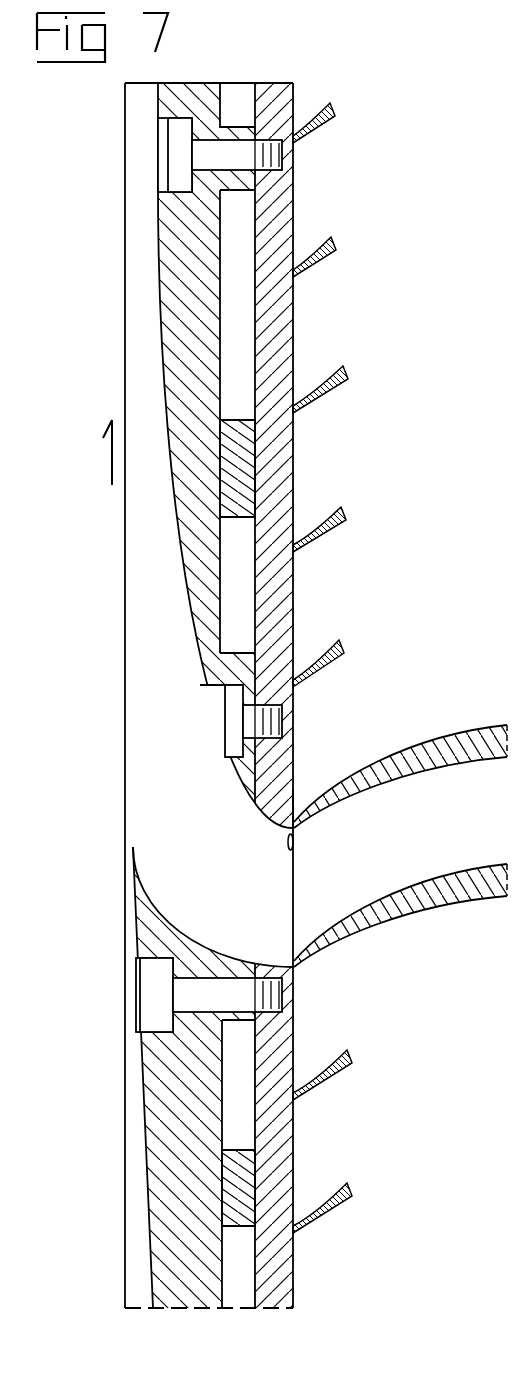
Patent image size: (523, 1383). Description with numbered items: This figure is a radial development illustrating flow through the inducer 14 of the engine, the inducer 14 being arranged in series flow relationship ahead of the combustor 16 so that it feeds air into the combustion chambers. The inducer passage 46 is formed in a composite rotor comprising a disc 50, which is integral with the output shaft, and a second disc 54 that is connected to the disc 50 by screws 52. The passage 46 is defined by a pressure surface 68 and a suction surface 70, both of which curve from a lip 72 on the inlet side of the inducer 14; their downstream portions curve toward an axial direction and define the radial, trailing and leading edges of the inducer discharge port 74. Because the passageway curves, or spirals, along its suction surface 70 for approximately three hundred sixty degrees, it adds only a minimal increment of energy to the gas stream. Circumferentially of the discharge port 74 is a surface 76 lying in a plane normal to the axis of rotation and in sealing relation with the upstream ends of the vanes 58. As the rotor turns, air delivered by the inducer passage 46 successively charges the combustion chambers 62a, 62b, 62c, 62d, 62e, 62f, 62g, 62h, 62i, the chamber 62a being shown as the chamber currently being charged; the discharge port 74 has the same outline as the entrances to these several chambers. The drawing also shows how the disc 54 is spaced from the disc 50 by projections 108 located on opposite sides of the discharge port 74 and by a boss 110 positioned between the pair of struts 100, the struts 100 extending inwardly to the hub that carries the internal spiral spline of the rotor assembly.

The inducer 14 is at (112, 677).
The combustor 16 is at (417, 700).
The inducer passage 46 is at (222, 843).
The disc 50 is at (278, 84).
The screws 52 is at (168, 133).
The second disc 54 is at (197, 1310).
The vanes 58 is at (447, 733).
The combustion chamber 62a is at (432, 818).
The combustion chamber 62b is at (392, 968).
The combustion chamber 62c is at (390, 1093).
The combustion chamber 62d is at (394, 1256).
The combustion chamber 62e is at (385, 182).
The combustion chamber 62f is at (387, 302).
The combustion chamber 62g is at (397, 452).
The combustion chamber 62h is at (390, 560).
The combustion chamber 62i is at (379, 690).
The pressure surface 68 is at (188, 928).
The suction surface 70 is at (192, 632).
The lip 72 is at (132, 848).
The inducer discharge port 74 is at (295, 852).
The surface 76 is at (297, 797).
The struts 100 is at (243, 420).
The projections 108 is at (263, 637).
The boss 110 is at (233, 88).